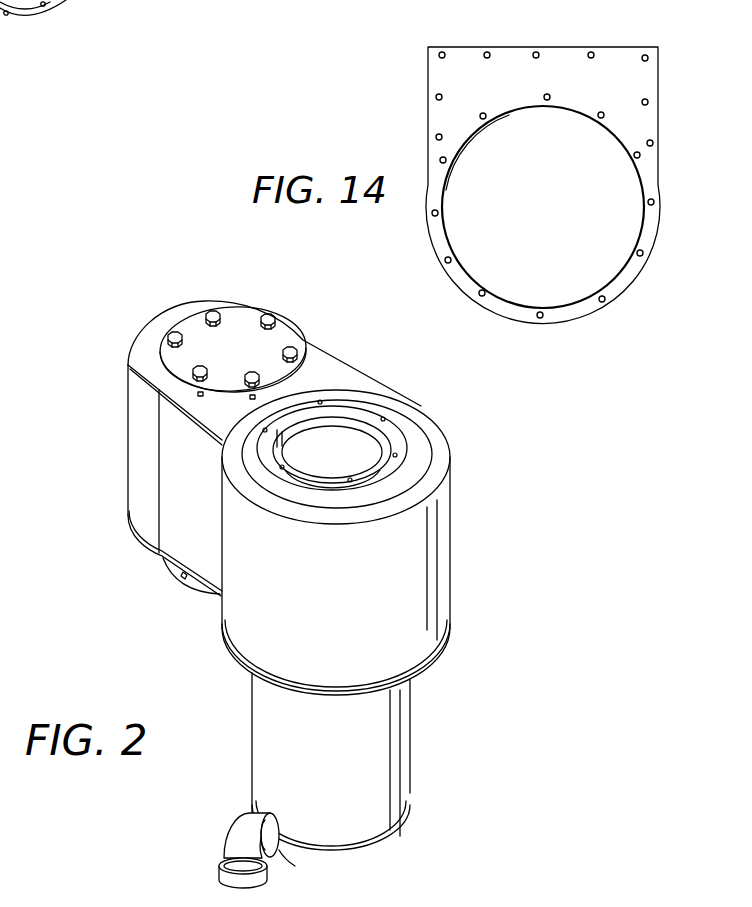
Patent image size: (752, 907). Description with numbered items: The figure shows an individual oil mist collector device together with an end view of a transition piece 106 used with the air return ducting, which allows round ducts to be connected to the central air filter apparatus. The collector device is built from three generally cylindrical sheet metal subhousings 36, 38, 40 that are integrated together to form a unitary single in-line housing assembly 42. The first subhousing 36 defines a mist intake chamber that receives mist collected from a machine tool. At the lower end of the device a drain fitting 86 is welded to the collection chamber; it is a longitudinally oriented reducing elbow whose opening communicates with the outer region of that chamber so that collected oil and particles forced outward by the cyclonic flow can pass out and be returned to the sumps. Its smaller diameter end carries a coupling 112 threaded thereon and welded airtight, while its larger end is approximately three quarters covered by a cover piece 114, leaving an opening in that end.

In FIG. 2, the first subhousing 36 is at (131, 429).
In FIG. 2, the second subhousing 38 is at (432, 572).
In FIG. 2, the third subhousing 40 is at (402, 747).
In FIG. 2, the housing assembly 42 is at (172, 298).
In FIG. 2, the drain fitting 86 is at (242, 817).
In FIG. 2, the coupling 112 is at (220, 873).
In FIG. 2, the cover piece 114 is at (278, 850).
In FIG. 14, the transition piece 106 is at (427, 113).